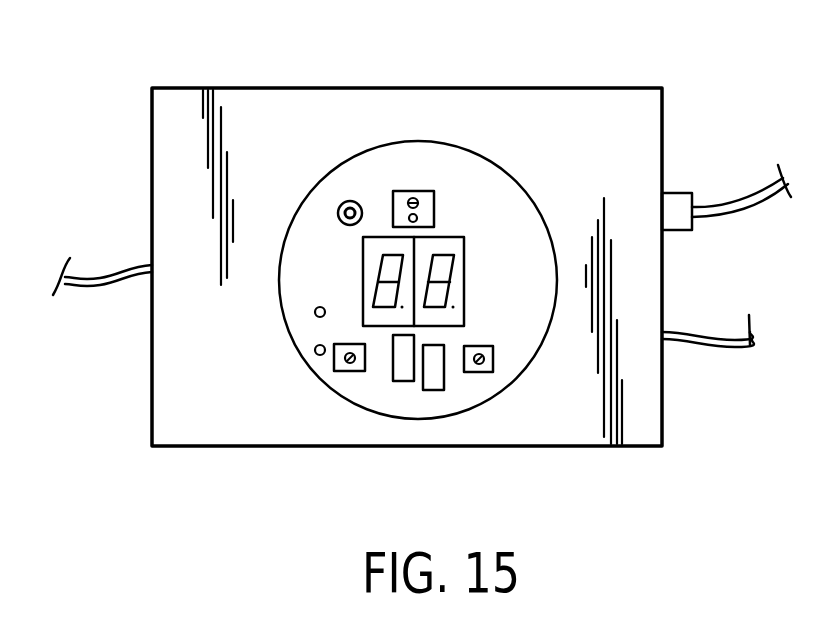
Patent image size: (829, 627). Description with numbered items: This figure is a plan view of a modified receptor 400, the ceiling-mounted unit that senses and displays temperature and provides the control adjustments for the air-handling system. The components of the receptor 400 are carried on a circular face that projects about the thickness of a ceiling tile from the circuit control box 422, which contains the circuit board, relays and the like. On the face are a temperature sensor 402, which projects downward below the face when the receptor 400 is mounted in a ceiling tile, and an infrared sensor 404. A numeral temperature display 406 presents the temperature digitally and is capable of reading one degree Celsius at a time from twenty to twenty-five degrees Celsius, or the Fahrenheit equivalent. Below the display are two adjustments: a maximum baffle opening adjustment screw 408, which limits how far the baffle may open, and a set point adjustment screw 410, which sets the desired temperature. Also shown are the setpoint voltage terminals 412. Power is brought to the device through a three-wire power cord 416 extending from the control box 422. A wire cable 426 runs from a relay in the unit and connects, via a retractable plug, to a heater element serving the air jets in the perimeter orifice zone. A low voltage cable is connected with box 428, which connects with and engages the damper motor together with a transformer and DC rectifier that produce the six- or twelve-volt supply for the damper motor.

The receptor 400 is at (345, 78).
The temperature sensor 402 is at (336, 214).
The infrared sensor 404 is at (431, 191).
The numeral temperature display 406 is at (465, 237).
The maximum baffle opening adjustment screw 408 is at (494, 361).
The set point adjustment screw 410 is at (340, 375).
The setpoint voltage terminals 412 is at (314, 314).
The power 3 wire cord 416 is at (737, 350).
The circuit control box 422 is at (152, 105).
The wire cable 426 is at (757, 205).
The box for low voltage cable 428 is at (90, 282).